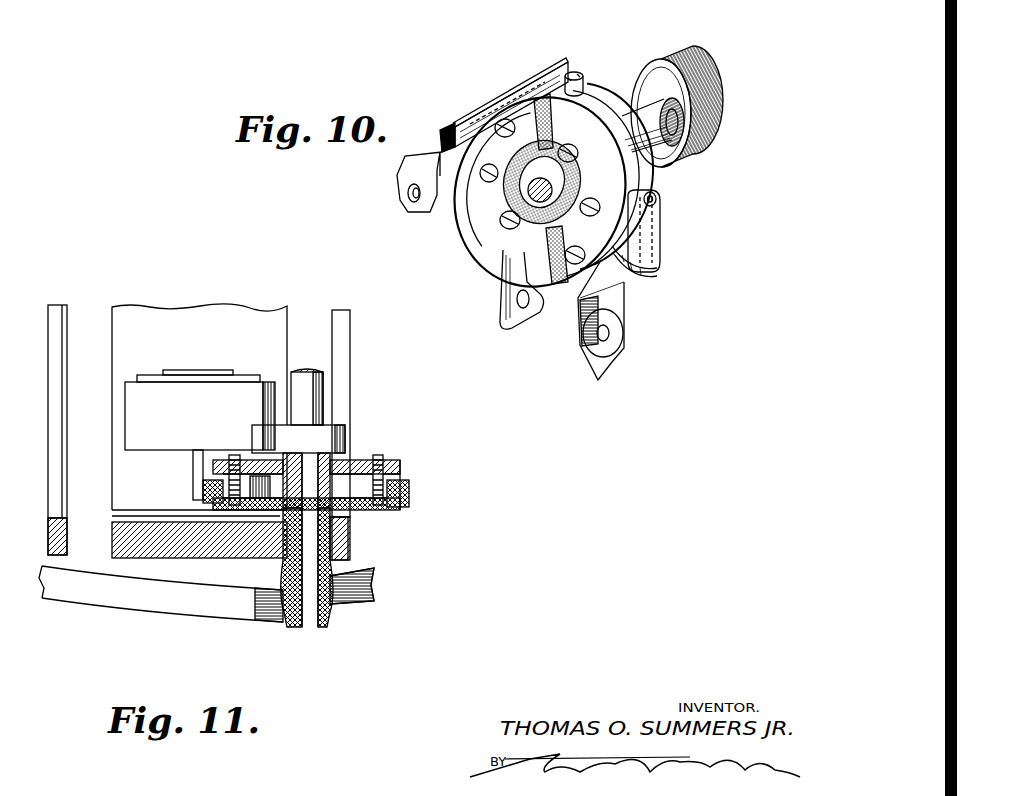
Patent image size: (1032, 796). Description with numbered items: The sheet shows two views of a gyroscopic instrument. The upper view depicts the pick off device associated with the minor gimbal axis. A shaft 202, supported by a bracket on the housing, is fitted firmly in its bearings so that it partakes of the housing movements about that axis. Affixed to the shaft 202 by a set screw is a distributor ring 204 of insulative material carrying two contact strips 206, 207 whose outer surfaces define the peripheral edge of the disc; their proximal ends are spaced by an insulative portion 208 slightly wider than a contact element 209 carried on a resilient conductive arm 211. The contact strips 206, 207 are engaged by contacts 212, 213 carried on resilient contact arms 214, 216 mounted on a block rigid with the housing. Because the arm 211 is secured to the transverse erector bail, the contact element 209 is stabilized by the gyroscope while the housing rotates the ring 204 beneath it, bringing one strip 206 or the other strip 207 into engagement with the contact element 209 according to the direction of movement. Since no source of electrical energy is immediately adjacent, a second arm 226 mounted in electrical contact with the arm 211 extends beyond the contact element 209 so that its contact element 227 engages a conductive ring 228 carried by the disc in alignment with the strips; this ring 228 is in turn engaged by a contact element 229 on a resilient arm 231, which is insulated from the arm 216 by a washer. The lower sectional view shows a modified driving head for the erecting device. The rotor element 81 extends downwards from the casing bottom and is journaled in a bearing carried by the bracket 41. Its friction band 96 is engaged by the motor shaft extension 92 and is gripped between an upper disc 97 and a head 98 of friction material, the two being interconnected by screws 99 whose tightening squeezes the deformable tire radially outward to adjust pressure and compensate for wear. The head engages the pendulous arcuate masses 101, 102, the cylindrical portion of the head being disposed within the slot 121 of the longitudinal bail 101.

In FIG. 10, the shaft 202 is at (653, 128).
In FIG. 10, the distributor ring 204 is at (592, 58).
In FIG. 10, the contact strip 206 is at (573, 282).
In FIG. 10, the contact strip 207 is at (498, 215).
In FIG. 10, the insulative portion 208 is at (520, 102).
In FIG. 10, the contact element 209 is at (553, 117).
In FIG. 10, the resilient arm 211 is at (482, 130).
In FIG. 10, the contact 212 is at (650, 233).
In FIG. 10, the contact 213 is at (465, 187).
In FIG. 10, the resilient contact arm 214 is at (650, 263).
In FIG. 10, the resilient contact arm 216 is at (480, 208).
In FIG. 10, the second contact-carrying arm 226 is at (487, 112).
In FIG. 10, the contact element 227 is at (578, 96).
In FIG. 10, the contact ring 228 is at (633, 170).
In FIG. 10, the contact element 229 is at (655, 198).
In FIG. 10, the resilient arm 231 is at (657, 219).
In FIG. 11, the bracket 41 is at (200, 390).
In FIG. 11, the rotor element 81 is at (325, 413).
In FIG. 11, the shaft extension 92 is at (197, 480).
In FIG. 11, the friction band 96 is at (410, 492).
In FIG. 11, the upper disc 97 is at (403, 471).
In FIG. 11, the head 98 is at (352, 508).
In FIG. 11, the screws 99 is at (380, 459).
In FIG. 11, the arcuate mass 101 is at (172, 316).
In FIG. 11, the arcuate mass 102 is at (160, 633).
In FIG. 11, the slot 121 is at (68, 322).